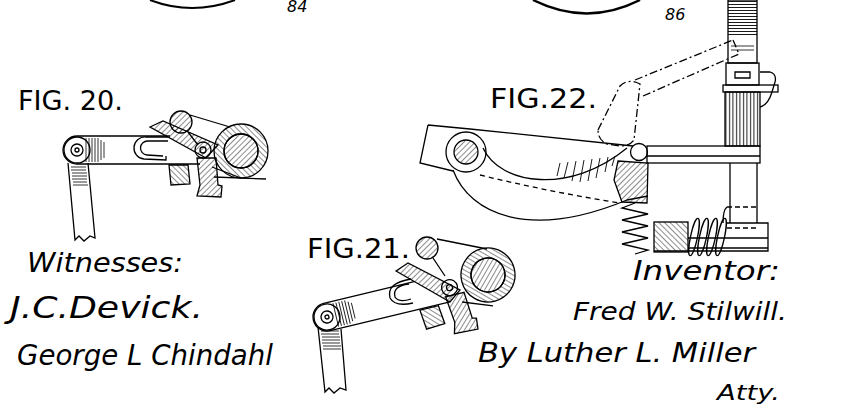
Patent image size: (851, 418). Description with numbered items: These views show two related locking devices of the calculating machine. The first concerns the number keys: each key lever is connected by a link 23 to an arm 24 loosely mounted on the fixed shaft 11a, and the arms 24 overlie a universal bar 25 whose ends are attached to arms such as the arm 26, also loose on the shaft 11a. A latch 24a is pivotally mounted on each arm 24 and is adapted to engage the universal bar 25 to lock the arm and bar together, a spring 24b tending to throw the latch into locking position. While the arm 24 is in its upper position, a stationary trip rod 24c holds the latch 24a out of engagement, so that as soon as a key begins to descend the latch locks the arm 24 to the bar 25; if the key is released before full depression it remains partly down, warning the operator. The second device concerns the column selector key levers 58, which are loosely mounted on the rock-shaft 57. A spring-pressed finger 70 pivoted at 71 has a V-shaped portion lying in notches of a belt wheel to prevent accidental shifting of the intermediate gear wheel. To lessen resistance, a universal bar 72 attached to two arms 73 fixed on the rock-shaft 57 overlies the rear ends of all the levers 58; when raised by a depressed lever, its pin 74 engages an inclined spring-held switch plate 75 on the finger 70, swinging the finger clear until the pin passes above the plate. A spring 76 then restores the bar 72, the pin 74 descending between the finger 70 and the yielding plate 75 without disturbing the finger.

In FIG. 20, the link 23 is at (72, 200).
In FIG. 21, the link 23 is at (328, 375).
In FIG. 20, the arm 24 is at (112, 126).
In FIG. 21, the arm 24 is at (355, 308).
In FIG. 20, the latch 24a is at (220, 192).
In FIG. 21, the latch 24a is at (467, 318).
In FIG. 20, the spring 24b is at (137, 135).
In FIG. 20, the trip rod 24c is at (189, 113).
In FIG. 21, the trip rod 24c is at (427, 237).
In FIG. 20, the fixed shaft 11a is at (264, 140).
In FIG. 21, the fixed shaft 11a is at (510, 268).
In FIG. 20, the universal bar 25 is at (180, 165).
In FIG. 21, the universal bar 25 is at (437, 302).
In FIG. 20, the arm 26 is at (230, 182).
In FIG. 22, the rock-shaft 57 is at (460, 138).
In FIG. 22, the column selector key lever 58 is at (432, 143).
In FIG. 22, the finger 70 is at (758, 18).
In FIG. 22, the pivot 71 is at (762, 238).
In FIG. 22, the universal bar 72 is at (641, 143).
In FIG. 22, the arm 73 is at (567, 213).
In FIG. 22, the pin 74 is at (662, 67).
In FIG. 22, the switch plate 75 is at (760, 124).
In FIG. 22, the spring 76 is at (627, 243).